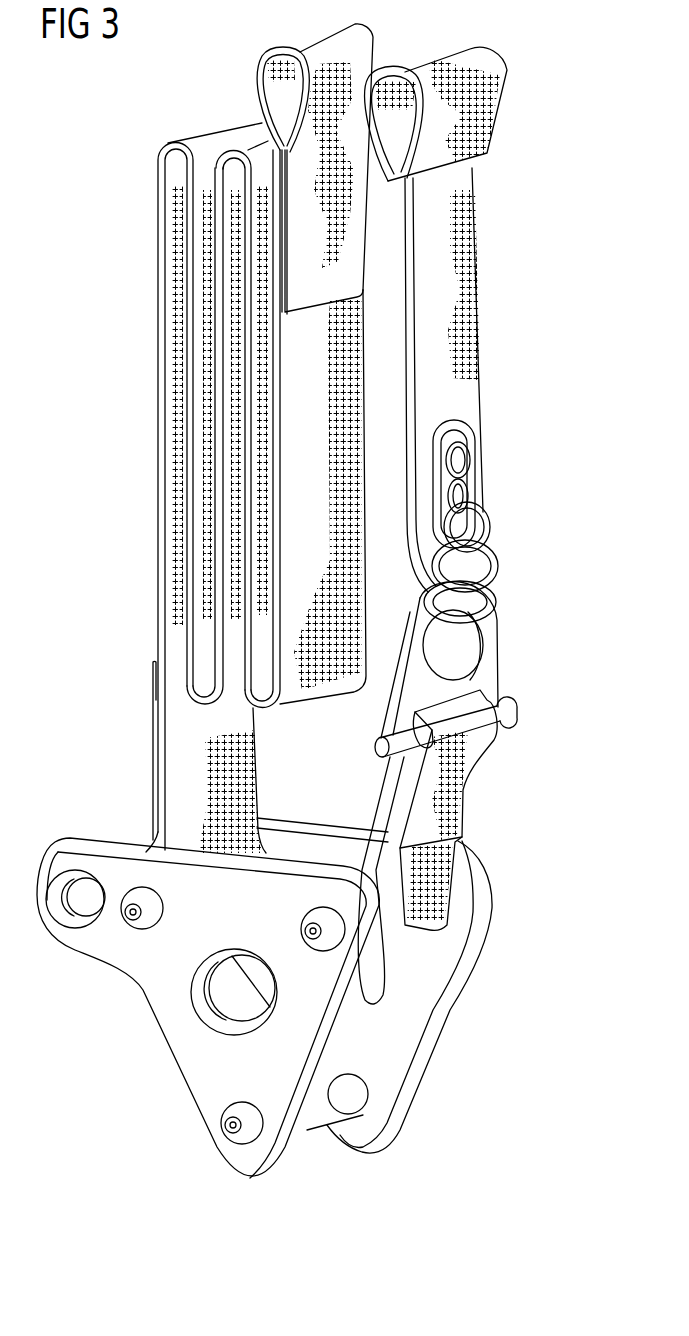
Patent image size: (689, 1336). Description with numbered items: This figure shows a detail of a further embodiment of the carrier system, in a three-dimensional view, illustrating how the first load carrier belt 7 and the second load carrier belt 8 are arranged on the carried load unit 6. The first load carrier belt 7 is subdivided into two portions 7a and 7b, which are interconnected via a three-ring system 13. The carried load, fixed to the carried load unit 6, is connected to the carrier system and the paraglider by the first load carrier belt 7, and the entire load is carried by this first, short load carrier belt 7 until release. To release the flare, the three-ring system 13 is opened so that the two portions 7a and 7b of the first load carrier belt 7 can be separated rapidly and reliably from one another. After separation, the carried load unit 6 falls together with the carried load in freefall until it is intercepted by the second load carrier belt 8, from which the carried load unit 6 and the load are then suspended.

The carried load unit 6 is at (80, 838).
The first load carrier belt 7 is at (518, 370).
The first portion of the first load carrier belt 7a is at (461, 265).
The second portion of the first load carrier belt 7b is at (471, 763).
The second load carrier belt 8 is at (187, 407).
The three-ring system 13 is at (522, 553).